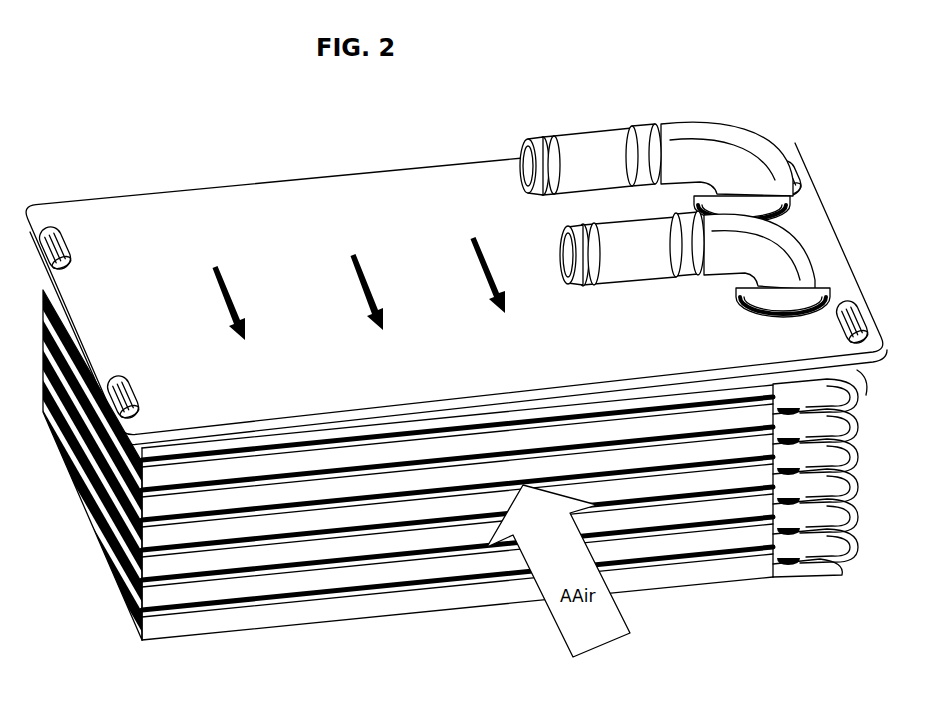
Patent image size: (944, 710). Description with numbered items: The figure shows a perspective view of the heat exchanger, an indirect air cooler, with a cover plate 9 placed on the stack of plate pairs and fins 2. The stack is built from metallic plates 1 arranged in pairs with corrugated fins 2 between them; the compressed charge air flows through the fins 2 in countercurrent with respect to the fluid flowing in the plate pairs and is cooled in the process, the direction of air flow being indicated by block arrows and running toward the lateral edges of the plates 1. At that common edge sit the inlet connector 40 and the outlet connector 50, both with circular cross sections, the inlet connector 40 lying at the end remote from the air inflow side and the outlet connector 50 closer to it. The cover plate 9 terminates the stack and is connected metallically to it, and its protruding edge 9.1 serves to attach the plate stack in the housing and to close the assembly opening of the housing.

The metallic plates 1 is at (760, 463).
The fins 2 is at (650, 515).
The cover plate 9 is at (217, 240).
The protruding edge 9.1 is at (40, 260).
The inlet connector 40 is at (572, 157).
The outlet connector 50 is at (625, 237).